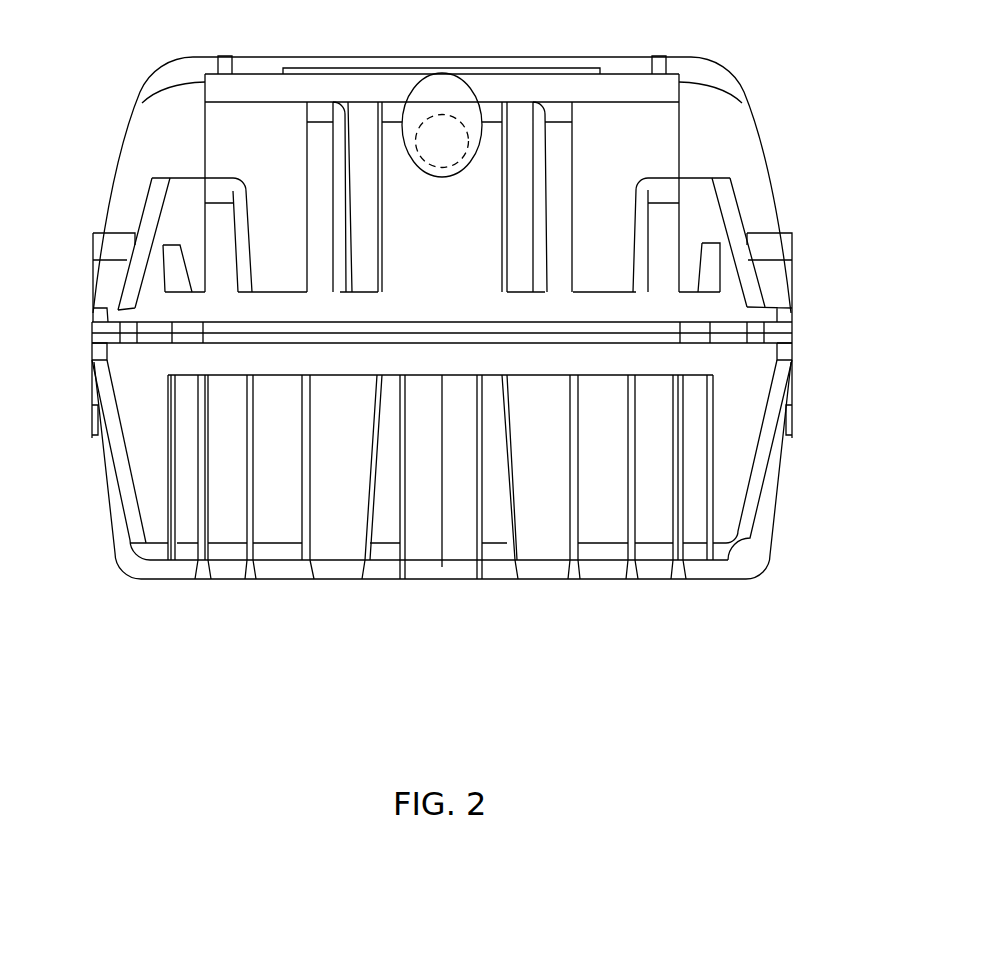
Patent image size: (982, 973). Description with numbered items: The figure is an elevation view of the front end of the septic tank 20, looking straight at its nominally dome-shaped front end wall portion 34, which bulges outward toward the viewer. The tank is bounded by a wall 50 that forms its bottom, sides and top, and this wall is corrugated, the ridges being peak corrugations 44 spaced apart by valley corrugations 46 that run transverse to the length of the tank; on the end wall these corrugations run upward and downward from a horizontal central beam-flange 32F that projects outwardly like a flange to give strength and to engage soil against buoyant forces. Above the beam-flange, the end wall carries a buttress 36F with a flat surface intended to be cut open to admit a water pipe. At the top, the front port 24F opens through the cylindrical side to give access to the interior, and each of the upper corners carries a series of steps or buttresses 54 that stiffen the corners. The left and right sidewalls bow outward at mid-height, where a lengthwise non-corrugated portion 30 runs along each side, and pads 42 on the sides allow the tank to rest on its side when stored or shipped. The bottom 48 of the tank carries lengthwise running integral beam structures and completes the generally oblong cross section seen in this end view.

The tank 20 is at (796, 119).
The front port 24F is at (337, 66).
The non-corrugated portion 30 is at (92, 315).
The front central beam-flange 32F is at (731, 344).
The end wall portion 34 is at (453, 249).
The front buttress 36F is at (456, 88).
The side pad 42 is at (92, 400).
The peak corrugation 44 is at (462, 567).
The valley corrugation 46 is at (382, 565).
The bottom 48 is at (599, 586).
The wall 50 is at (579, 53).
The step buttress 54 is at (764, 221).